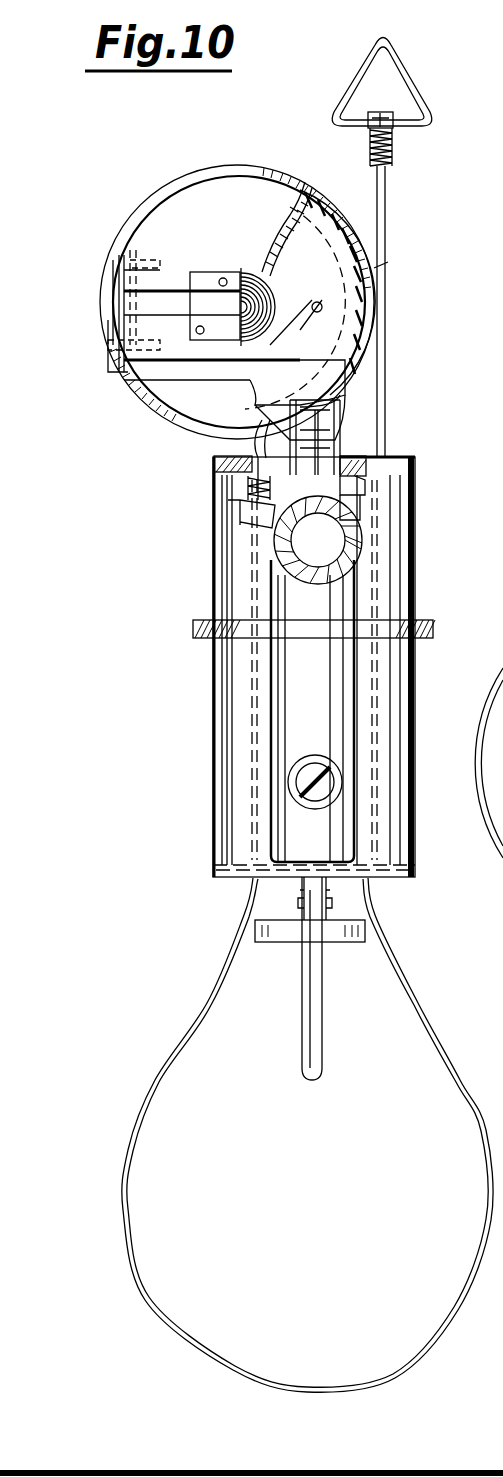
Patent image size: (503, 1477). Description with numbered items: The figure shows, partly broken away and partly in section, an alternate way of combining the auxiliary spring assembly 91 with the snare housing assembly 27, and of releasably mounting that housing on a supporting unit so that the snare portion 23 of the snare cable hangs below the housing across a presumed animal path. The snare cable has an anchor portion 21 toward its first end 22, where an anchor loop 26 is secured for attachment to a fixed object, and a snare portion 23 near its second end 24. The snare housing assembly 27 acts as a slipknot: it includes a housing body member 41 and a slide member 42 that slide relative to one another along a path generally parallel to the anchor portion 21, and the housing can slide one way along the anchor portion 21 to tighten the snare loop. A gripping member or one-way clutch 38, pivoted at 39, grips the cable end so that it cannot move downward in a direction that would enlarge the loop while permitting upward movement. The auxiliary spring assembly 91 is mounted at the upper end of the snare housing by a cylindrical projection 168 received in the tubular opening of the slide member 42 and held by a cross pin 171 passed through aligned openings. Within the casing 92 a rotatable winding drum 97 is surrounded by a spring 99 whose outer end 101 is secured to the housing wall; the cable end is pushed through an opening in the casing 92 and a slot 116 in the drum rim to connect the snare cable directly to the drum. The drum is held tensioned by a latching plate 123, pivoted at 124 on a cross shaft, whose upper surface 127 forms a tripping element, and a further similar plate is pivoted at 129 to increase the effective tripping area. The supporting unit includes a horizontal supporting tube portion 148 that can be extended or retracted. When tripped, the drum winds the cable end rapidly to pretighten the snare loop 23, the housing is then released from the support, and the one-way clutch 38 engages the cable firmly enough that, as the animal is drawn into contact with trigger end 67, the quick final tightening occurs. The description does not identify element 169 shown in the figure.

The anchor portion 21 is at (388, 288).
The first end of snare cable 22 is at (385, 110).
The snare portion 23 is at (132, 1165).
The second end of snare cable 24 is at (218, 453).
The anchor loop 26 is at (428, 115).
The snare housing assembly 27 is at (180, 737).
The gripping member or one-way clutch 38 is at (246, 498).
The pivot of gripping member 39 is at (240, 520).
The housing body member 41 is at (416, 683).
The slide member 42 is at (416, 462).
The trigger end 67 is at (336, 946).
The auxiliary spring assembly 91 is at (84, 282).
The casing or cylindrical housing 92 is at (300, 218).
The rotatable winding drum 97 is at (338, 398).
The spring 99 is at (280, 262).
The outer end of spring 101 is at (355, 327).
The slots in winding drum rim 116 is at (343, 424).
The latching plate 123 is at (243, 186).
The pivot of latching plate 124 is at (112, 328).
The upper surface of tripping element 127 is at (162, 383).
The pivot of further tripping member 129 is at (118, 213).
The horizontal supporting tube portion 148 is at (290, 576).
The cylindrical projection 168 is at (338, 448).
The bushing 169 is at (362, 500).
The cross pin 171 is at (368, 485).